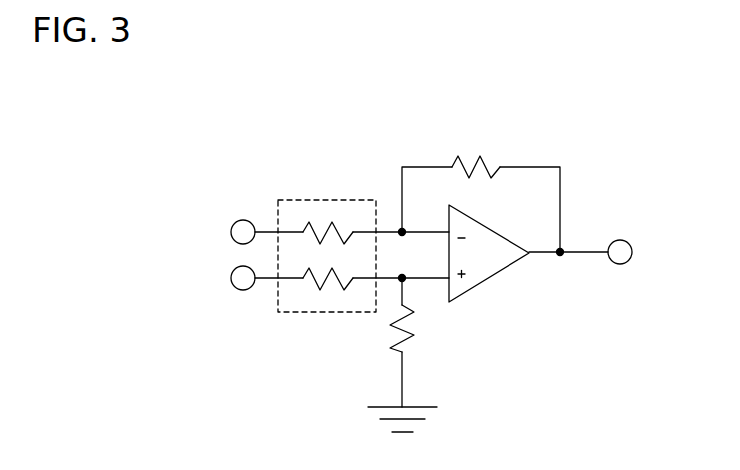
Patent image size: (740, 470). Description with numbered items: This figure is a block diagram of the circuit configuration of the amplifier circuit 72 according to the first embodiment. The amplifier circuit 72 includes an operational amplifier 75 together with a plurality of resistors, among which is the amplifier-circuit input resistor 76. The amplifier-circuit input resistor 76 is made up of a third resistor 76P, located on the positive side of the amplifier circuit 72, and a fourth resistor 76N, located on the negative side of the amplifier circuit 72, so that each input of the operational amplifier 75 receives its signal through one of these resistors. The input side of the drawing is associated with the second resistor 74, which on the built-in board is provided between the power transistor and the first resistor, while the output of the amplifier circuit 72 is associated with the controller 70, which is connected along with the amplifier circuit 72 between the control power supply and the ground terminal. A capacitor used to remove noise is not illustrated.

The controller 70 is at (636, 252).
The amplifier circuit 72 is at (514, 203).
The second resistor 74 is at (250, 255).
The operational amplifier 75 is at (490, 297).
The amplifier-circuit input resistor 76 is at (324, 250).
The fourth resistor 76N is at (322, 215).
The third resistor 76P is at (316, 312).